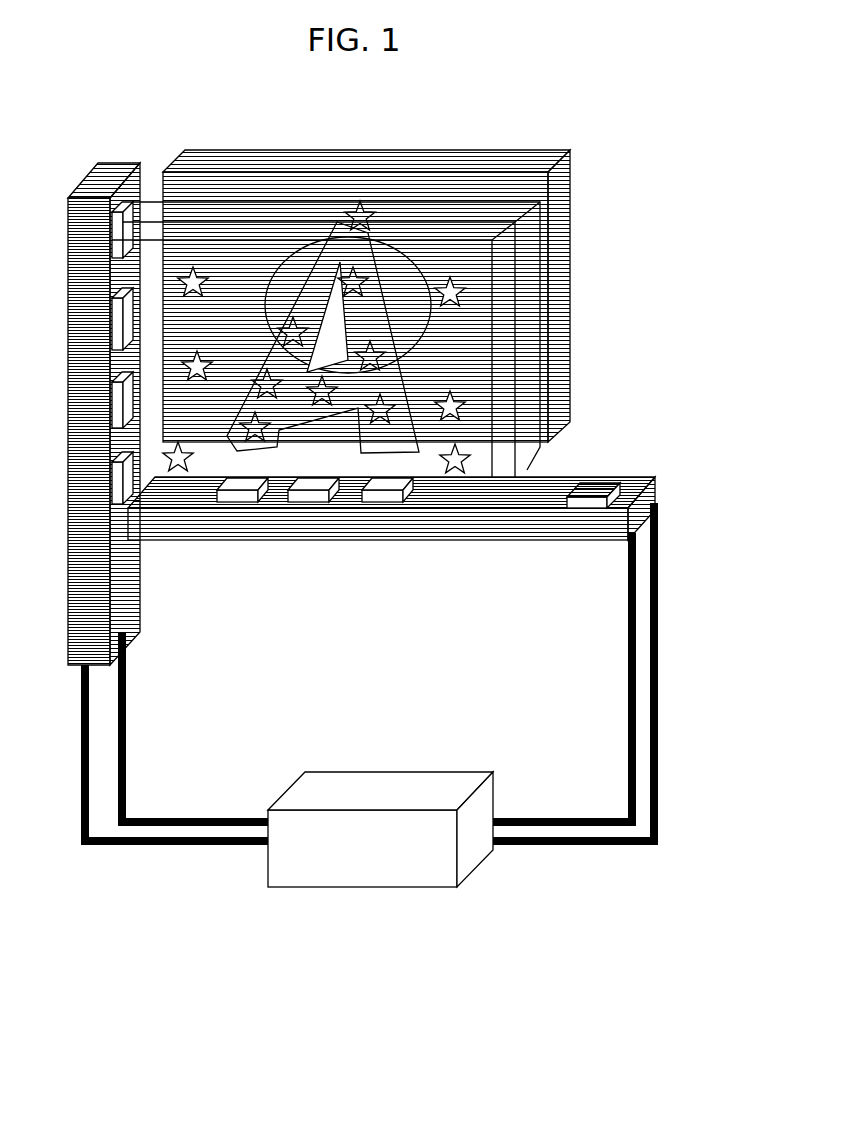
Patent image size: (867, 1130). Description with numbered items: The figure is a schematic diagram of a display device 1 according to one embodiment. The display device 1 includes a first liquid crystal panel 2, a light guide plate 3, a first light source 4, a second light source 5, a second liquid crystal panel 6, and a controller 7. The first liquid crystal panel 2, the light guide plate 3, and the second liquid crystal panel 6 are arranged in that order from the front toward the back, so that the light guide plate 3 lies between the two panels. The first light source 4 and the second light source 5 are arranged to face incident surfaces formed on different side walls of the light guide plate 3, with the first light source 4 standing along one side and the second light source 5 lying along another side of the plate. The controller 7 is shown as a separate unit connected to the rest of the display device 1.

The display device 1 is at (377, 570).
The first liquid crystal panel 2 is at (502, 462).
The light guide plate 3 is at (530, 358).
The first light source 4 is at (50, 210).
The second light source 5 is at (420, 565).
The second liquid crystal panel 6 is at (562, 184).
The controller 7 is at (413, 888).